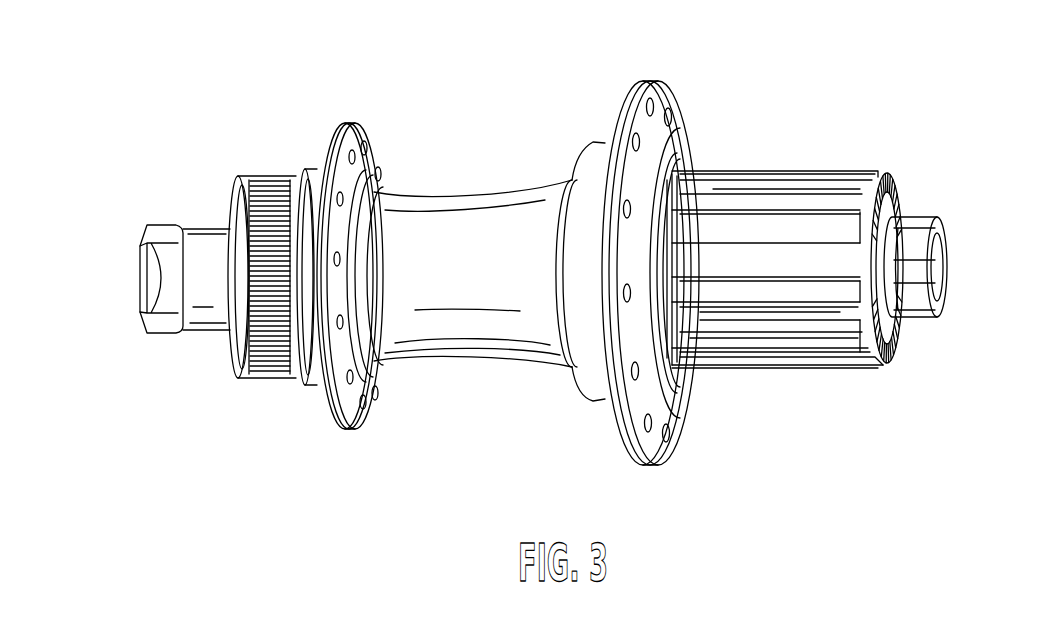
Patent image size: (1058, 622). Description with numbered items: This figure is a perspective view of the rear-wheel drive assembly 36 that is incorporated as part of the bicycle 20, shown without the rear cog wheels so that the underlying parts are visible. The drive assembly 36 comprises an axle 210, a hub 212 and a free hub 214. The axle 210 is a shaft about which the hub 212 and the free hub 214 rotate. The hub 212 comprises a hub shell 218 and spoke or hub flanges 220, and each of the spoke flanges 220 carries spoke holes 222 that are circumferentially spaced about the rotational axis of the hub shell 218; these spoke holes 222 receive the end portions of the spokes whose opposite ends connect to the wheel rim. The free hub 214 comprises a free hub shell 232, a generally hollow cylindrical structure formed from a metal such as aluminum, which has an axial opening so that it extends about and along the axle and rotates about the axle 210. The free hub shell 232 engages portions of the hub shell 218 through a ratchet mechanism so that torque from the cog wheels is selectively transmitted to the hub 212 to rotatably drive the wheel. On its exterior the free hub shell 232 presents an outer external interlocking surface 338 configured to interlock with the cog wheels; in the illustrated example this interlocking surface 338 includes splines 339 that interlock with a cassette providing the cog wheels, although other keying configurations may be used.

The bicycle 20 is at (90, 108).
The drive assembly 36 is at (200, 153).
The axle 210 is at (160, 224).
The hub 212 is at (342, 124).
The free hub 214 is at (822, 177).
The hub shell 218 is at (440, 198).
The spoke flanges 220 is at (365, 128).
The spoke holes 222 is at (365, 402).
The free hub shell 232 is at (762, 175).
The outer external interlocking surface 338 is at (775, 367).
The splines 339 is at (860, 330).